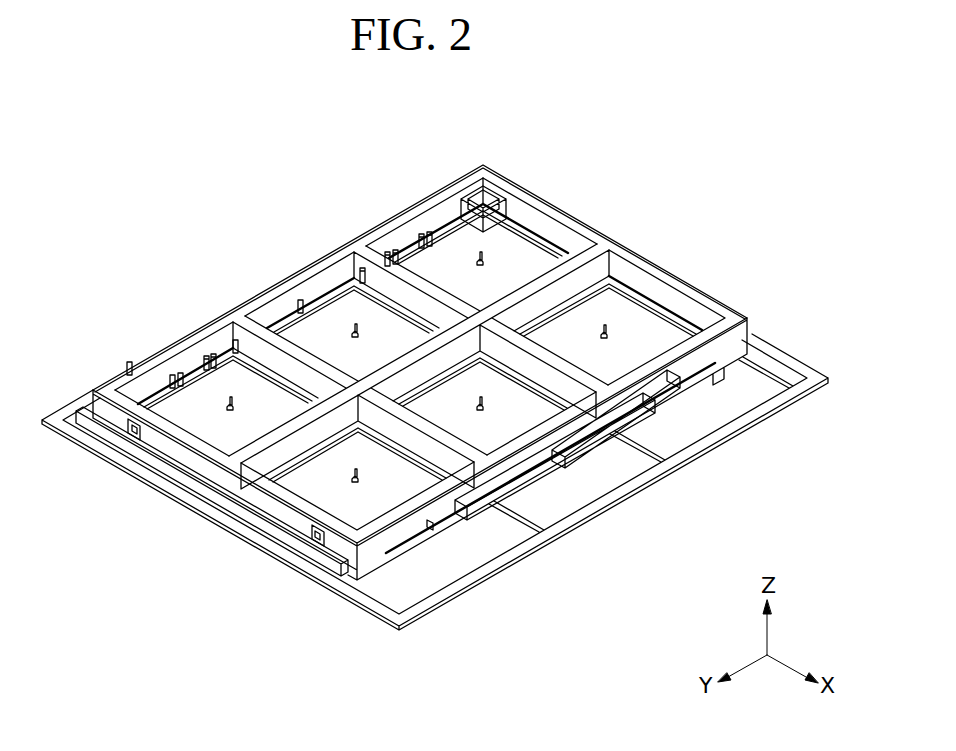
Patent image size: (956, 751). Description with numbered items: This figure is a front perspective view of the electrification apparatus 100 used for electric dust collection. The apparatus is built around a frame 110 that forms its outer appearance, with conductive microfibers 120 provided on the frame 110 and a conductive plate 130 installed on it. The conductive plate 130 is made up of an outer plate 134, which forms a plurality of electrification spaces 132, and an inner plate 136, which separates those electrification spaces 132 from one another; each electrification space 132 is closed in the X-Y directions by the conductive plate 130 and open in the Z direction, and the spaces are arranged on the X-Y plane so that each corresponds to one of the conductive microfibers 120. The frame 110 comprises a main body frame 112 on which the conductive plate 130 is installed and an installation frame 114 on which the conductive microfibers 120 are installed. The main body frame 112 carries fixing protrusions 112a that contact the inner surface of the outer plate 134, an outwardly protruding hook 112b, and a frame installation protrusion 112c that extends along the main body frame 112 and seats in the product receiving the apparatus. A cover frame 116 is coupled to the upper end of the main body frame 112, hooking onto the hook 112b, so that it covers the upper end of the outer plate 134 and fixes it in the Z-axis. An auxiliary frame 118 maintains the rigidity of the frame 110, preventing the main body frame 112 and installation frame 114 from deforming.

The electrification apparatus 100 is at (96, 142).
The frame 110 is at (233, 548).
The main body frame 112 is at (342, 565).
The fixing protrusion 112a is at (211, 355).
The hook 112b is at (318, 538).
The frame installation protrusion 112c is at (180, 475).
The installation frame 114 is at (178, 340).
The cover frame 116 is at (123, 377).
The auxiliary frame 118 is at (457, 595).
The conductive microfiber 120 is at (607, 335).
The conductive plate 130 is at (415, 272).
The electrification space 132 is at (530, 255).
The outer plate 134 is at (450, 208).
The inner plate 136 is at (363, 272).